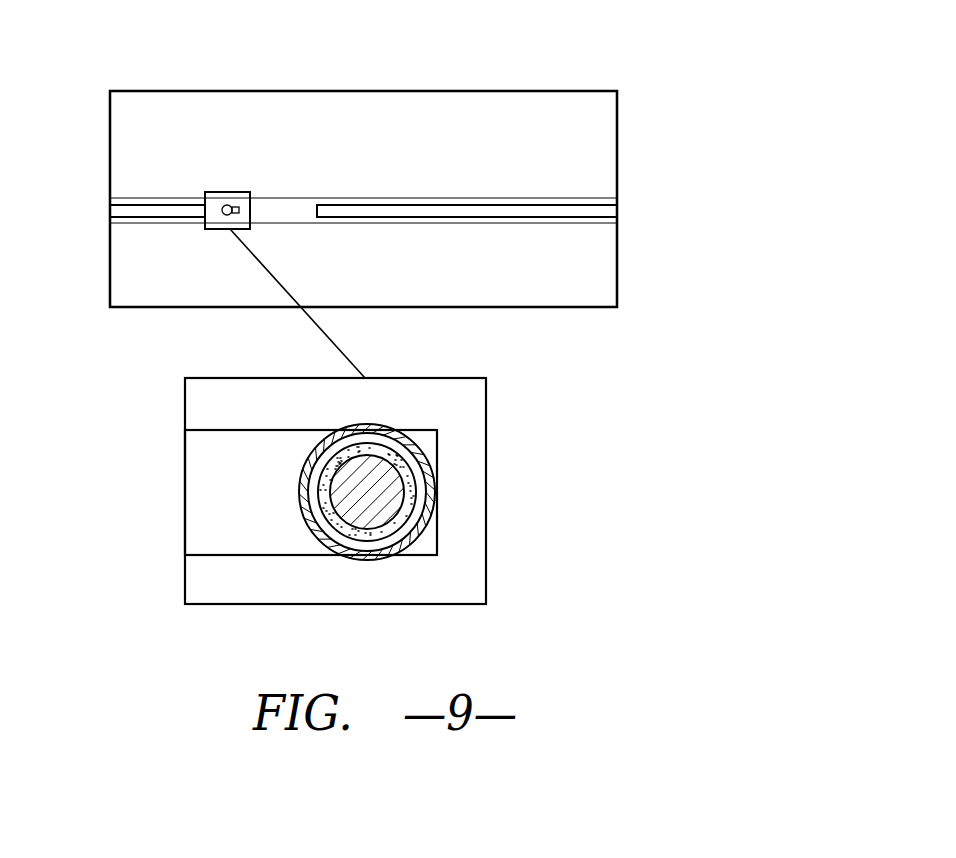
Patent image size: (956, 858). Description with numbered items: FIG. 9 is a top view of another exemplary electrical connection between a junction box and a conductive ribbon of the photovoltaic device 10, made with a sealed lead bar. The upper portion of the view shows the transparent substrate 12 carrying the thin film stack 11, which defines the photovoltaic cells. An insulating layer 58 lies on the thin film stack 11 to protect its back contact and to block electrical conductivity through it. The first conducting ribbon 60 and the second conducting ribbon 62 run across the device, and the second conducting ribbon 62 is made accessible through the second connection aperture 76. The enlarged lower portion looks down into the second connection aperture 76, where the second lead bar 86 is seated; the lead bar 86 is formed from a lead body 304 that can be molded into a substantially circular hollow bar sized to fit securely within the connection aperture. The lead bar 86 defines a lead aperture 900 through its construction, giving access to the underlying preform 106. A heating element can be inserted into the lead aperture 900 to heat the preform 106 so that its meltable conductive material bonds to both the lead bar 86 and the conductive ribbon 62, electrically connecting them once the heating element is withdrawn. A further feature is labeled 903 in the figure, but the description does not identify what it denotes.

The photovoltaic device 10 is at (665, 88).
The thin film stack 11 is at (193, 112).
The transparent substrate 12 is at (262, 108).
The insulating layer 58 is at (287, 208).
The first conducting ribbon 60 is at (580, 213).
The second conducting ribbon 62 is at (147, 206).
The second connection aperture 76 is at (375, 418).
The second lead bar 86 is at (422, 455).
The preform 106 is at (370, 530).
The lead body 304 is at (423, 505).
The lead aperture 900 is at (420, 482).
The conductor core 903 is at (373, 480).